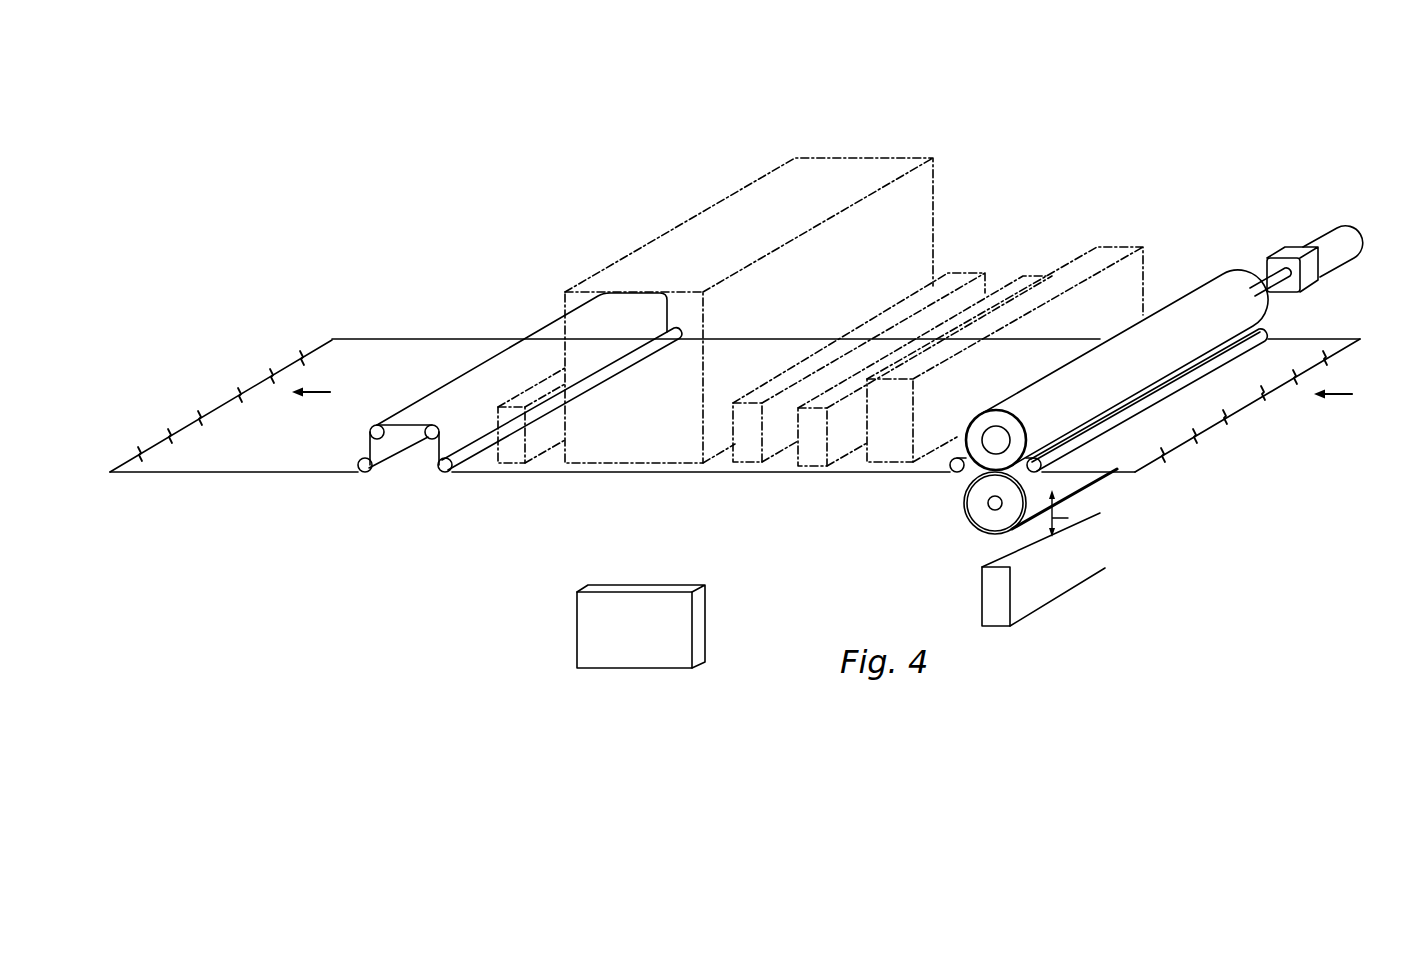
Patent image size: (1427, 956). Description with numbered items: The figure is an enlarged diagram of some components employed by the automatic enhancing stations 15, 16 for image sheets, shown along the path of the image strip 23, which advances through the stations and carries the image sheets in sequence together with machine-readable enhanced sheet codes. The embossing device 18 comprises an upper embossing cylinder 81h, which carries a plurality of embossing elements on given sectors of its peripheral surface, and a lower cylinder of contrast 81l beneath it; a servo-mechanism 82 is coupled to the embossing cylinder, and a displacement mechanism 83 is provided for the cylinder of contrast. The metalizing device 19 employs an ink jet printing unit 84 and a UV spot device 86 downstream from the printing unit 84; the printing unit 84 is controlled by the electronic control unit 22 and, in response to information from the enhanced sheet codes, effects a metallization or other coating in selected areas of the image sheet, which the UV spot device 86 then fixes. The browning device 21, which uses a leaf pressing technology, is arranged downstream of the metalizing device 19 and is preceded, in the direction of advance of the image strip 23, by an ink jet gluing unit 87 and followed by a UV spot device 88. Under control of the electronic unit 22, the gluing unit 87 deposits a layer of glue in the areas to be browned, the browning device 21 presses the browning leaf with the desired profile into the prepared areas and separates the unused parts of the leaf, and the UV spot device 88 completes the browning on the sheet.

The automatic enhancing station 15 is at (1206, 140).
The automatic enhancing station 16 is at (1108, 400).
The embossing device 18 is at (1241, 249).
The metalizing device 19 is at (1131, 232).
The browning device 21 is at (857, 136).
The electronic control unit 22 is at (722, 575).
The image strip 23 is at (1200, 424).
The upper embossing cylinder 81h is at (1246, 308).
The lower cylinder of contrast 81l is at (1063, 488).
The servo-mechanism 82 is at (1356, 243).
The displacement mechanism 83 is at (1066, 584).
The ink jet printing unit 84 is at (1143, 268).
The UV spot device 86 is at (1022, 276).
The ink jet gluing unit 87 is at (961, 274).
The UV spot device 88 is at (530, 386).